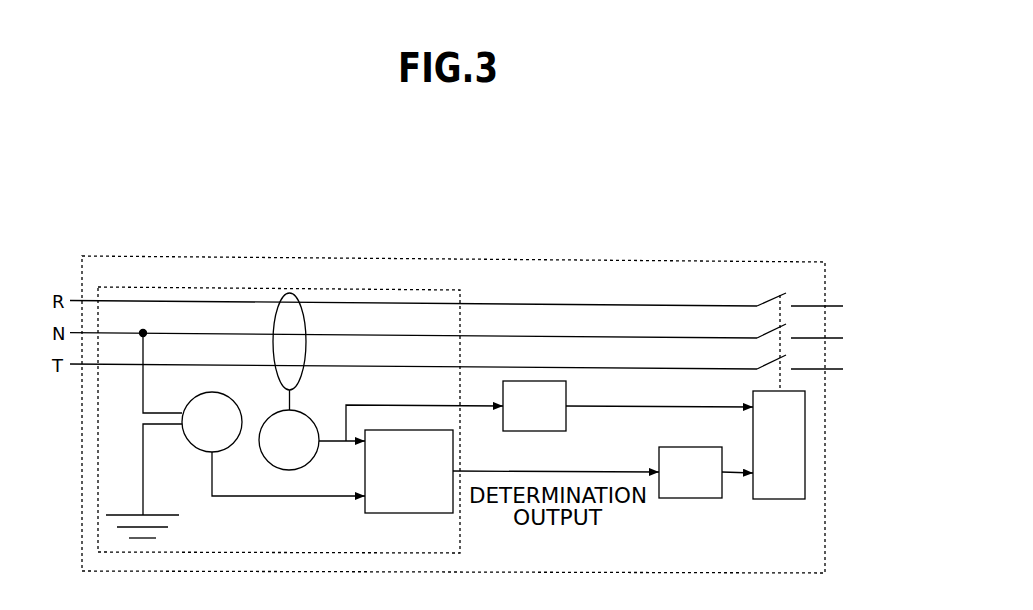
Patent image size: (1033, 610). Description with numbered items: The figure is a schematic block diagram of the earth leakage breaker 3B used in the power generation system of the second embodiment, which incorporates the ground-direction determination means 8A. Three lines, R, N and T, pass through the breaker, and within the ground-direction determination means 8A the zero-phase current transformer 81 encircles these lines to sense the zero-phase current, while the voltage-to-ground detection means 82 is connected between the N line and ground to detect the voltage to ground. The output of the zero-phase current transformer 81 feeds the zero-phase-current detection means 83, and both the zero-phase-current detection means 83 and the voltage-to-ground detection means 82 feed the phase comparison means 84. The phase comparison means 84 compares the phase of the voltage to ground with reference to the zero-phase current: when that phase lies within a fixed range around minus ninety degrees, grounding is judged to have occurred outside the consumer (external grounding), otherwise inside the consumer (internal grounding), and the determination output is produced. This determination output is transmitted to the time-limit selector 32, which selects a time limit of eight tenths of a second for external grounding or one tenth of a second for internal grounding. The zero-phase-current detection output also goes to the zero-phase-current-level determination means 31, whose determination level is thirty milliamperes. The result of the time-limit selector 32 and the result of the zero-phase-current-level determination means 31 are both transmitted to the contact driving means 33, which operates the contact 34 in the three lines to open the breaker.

The earth leakage breaker 3B is at (453, 404).
The ground-direction determination means 8A is at (279, 409).
The zero-phase current transformer 81 is at (304, 341).
The voltage-to-ground detection means 82 is at (212, 422).
The zero-phase-current detection means 83 is at (289, 440).
The phase comparison means 84 is at (409, 471).
The zero-phase-current-level determination means 31 is at (534, 406).
The time-limit selector 32 is at (690, 472).
The contact driving means 33 is at (779, 445).
The contact 34 is at (800, 327).